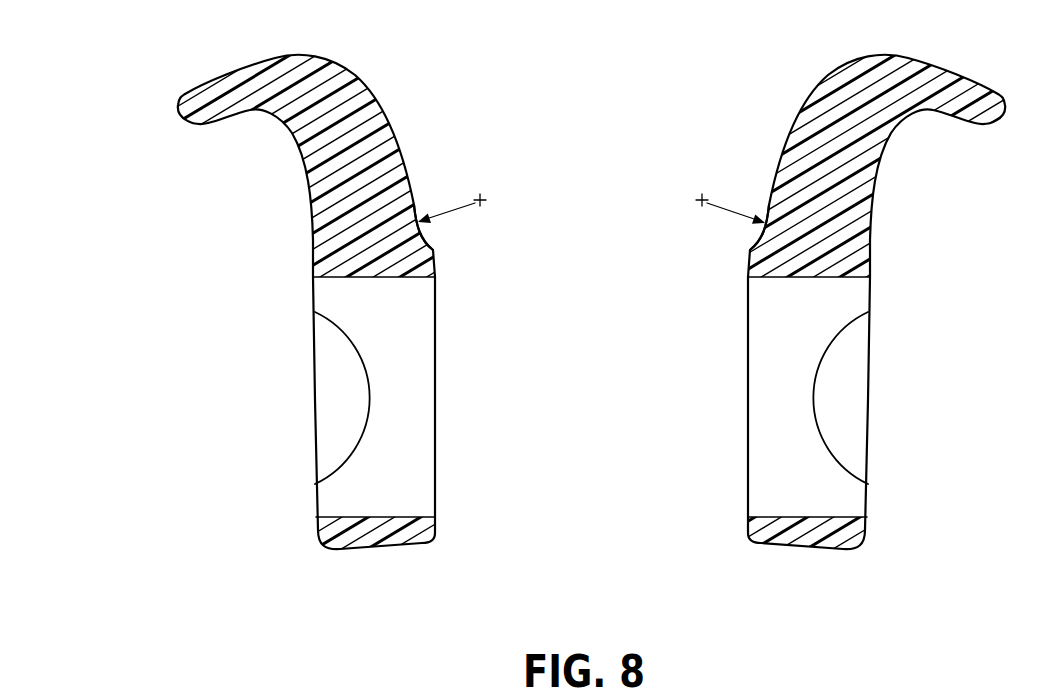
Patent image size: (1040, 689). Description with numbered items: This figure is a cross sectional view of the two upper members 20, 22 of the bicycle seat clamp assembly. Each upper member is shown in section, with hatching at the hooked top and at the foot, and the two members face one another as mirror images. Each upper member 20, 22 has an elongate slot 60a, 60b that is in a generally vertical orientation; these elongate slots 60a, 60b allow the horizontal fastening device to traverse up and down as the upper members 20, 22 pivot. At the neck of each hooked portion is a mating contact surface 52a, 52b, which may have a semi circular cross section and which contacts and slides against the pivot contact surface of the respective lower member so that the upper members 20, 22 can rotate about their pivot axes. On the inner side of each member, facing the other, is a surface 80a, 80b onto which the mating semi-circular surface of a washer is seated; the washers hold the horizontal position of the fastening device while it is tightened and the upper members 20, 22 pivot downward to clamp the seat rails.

The upper member 20 is at (807, 562).
The upper member 22 is at (373, 562).
The elongate slot 60a is at (933, 113).
The elongate slot 60b is at (250, 113).
The mating contact surface 52a is at (746, 238).
The mating contact surface 52b is at (437, 238).
The surface 80a is at (815, 403).
The surface 80b is at (370, 403).